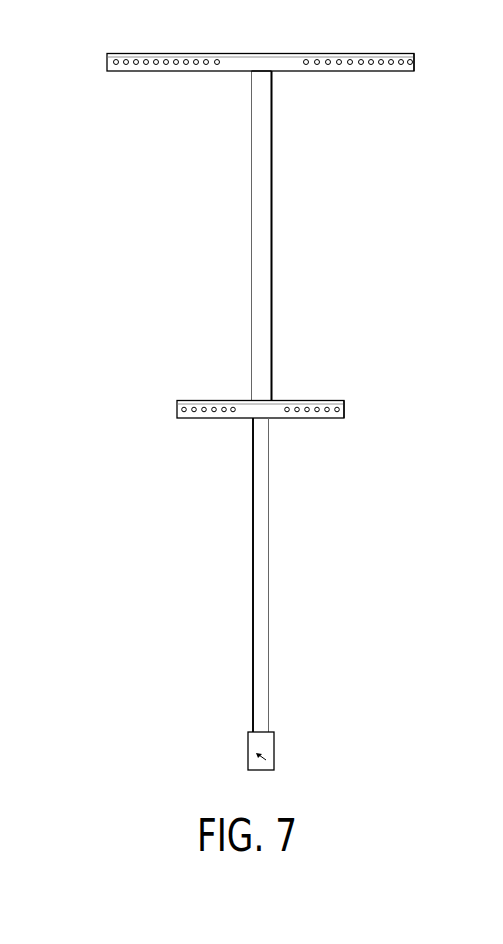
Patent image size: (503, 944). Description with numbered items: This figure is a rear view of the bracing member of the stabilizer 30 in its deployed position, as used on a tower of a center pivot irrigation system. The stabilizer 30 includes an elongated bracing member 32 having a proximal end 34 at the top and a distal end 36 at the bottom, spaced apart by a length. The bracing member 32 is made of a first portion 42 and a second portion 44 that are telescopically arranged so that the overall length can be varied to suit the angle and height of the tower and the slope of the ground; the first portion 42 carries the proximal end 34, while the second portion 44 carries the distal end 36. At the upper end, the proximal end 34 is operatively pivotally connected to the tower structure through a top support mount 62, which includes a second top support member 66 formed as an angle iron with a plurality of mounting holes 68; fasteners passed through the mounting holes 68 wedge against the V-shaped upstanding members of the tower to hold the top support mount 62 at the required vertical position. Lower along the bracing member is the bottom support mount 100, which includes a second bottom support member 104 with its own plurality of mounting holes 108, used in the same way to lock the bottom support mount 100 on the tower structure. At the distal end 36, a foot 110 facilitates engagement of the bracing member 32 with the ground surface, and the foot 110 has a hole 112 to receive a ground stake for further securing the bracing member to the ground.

The stabilizer 30 is at (205, 271).
The bracing member 32 is at (272, 343).
The proximal end 34 is at (252, 71).
The distal end 36 is at (260, 718).
The first portion 42 is at (251, 331).
The second portion 44 is at (253, 655).
The top support mount 62 is at (80, 61).
The second top support member 66 is at (414, 62).
The mounting holes 68 is at (350, 63).
The bottom support mount 100 is at (150, 401).
The second bottom support member 104 is at (346, 407).
The mounting holes 108 is at (326, 411).
The foot 110 is at (249, 769).
The hole 112 is at (272, 765).